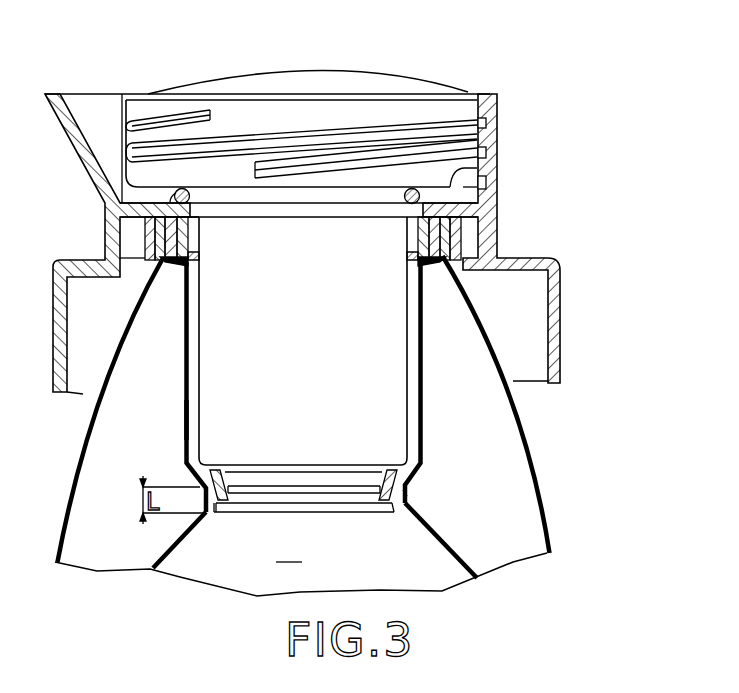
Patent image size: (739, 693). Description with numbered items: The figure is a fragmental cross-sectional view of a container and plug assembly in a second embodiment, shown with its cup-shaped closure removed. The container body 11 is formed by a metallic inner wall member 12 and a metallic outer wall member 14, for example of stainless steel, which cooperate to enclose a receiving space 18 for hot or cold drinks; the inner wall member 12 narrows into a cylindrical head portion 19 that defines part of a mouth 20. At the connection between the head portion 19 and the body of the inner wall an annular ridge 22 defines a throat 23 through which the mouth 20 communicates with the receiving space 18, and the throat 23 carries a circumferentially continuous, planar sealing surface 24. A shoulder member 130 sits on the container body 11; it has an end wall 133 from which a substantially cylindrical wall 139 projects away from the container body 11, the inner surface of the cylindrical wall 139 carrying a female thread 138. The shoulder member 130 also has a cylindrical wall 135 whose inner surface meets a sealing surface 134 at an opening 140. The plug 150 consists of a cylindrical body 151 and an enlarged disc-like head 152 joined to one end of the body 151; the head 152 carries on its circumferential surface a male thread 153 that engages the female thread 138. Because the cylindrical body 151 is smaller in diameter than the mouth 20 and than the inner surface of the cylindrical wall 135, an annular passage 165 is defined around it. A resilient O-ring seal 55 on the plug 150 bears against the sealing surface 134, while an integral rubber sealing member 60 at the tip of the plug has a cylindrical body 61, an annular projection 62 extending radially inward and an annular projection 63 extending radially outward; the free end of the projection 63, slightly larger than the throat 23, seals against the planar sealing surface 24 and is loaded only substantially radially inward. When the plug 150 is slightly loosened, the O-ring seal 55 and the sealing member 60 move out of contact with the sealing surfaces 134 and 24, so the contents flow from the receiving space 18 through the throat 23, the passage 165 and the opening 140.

The container body 11 is at (505, 570).
The metallic inner wall member 12 is at (458, 547).
The metallic outer wall member 14 is at (540, 478).
The receiving space 18 is at (291, 549).
The cylindrical head portion 19 is at (183, 425).
The mouth 20 is at (190, 380).
The annular ridge 22 is at (402, 493).
The throat 23 is at (400, 500).
The planar sealing surface 24 is at (408, 498).
The O-ring seal 55 is at (197, 192).
The annular sealing member 60 is at (208, 470).
The cylindrical body 61 is at (218, 507).
The annular projection 62 is at (243, 490).
The annular projection 63 is at (183, 463).
The shoulder member 130 is at (503, 207).
The end wall 133 is at (495, 170).
The sealing surface 134 is at (175, 198).
The cylindrical wall 135 is at (190, 242).
The female thread 138 is at (490, 190).
The cylindrical wall 139 is at (499, 124).
The opening 140 is at (190, 212).
The plug 150 is at (397, 77).
The cylindrical body 151 is at (390, 377).
The enlarged disc-like head 152 is at (312, 73).
The male thread 153 is at (420, 127).
The annular passage 165 is at (197, 328).